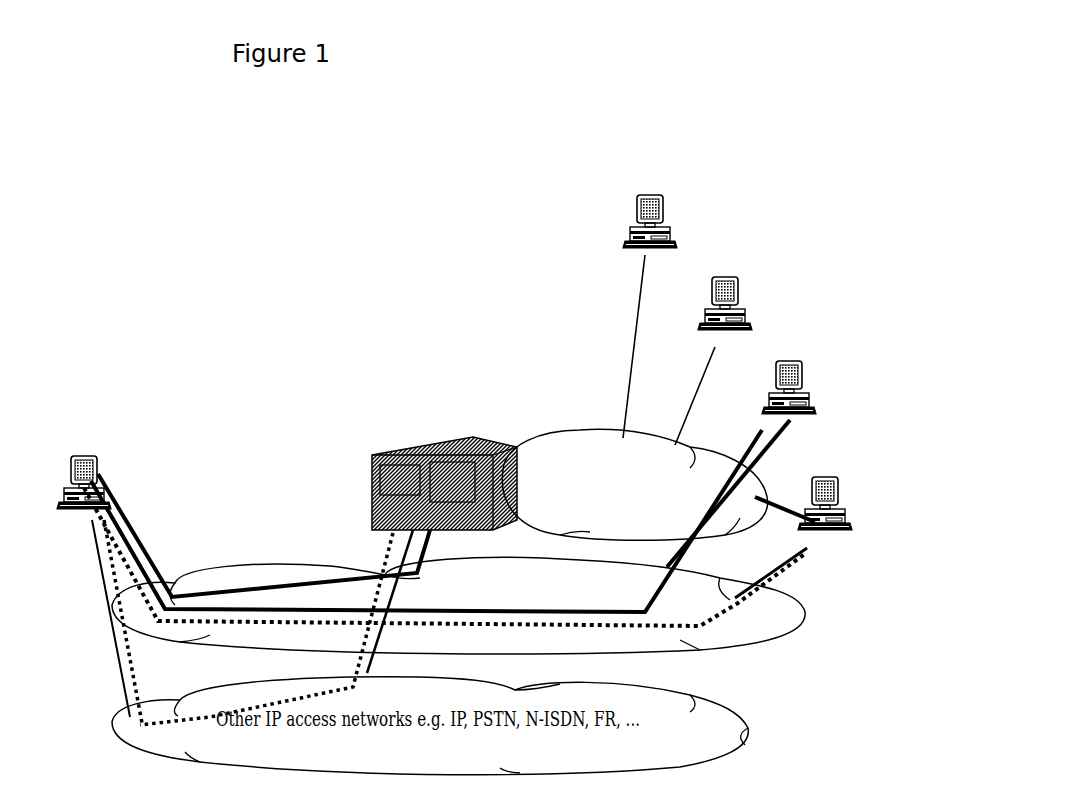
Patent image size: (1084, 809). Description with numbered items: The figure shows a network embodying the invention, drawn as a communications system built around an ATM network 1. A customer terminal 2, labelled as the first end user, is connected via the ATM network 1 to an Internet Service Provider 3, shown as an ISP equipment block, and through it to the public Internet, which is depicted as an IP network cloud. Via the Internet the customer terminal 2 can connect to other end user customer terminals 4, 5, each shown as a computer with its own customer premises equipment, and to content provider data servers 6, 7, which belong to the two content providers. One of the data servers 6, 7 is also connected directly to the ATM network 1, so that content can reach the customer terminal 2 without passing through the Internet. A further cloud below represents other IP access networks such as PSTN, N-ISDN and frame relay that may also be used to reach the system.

The ATM network 1 is at (246, 575).
The customer terminal 2 is at (96, 472).
The Internet Service Provider 3 is at (395, 452).
The end user customer terminal 4 is at (555, 443).
The end user customer terminal 5 is at (738, 290).
The content provider data server 6 is at (667, 245).
The content provider data server 7 is at (798, 403).